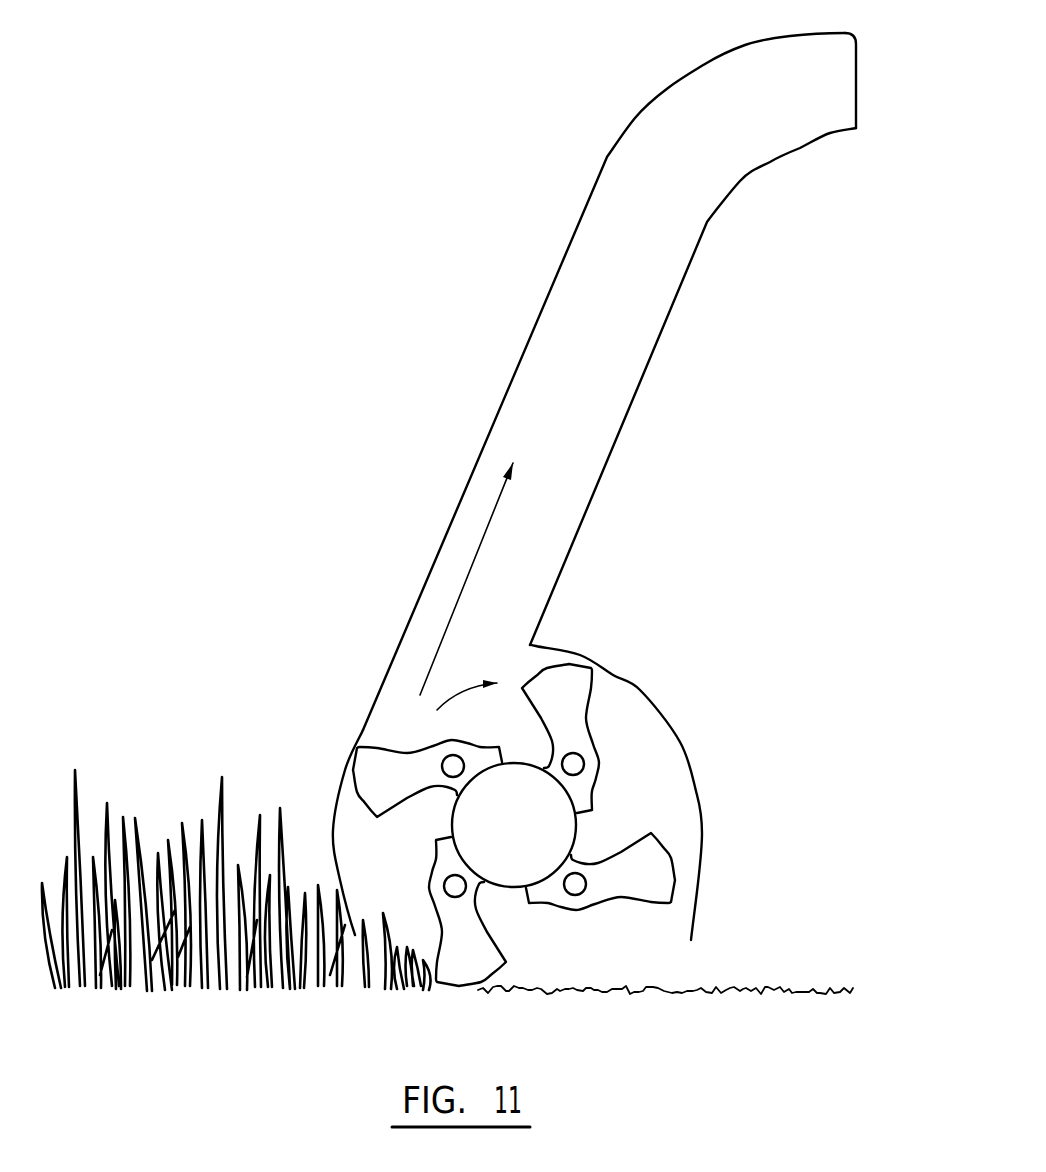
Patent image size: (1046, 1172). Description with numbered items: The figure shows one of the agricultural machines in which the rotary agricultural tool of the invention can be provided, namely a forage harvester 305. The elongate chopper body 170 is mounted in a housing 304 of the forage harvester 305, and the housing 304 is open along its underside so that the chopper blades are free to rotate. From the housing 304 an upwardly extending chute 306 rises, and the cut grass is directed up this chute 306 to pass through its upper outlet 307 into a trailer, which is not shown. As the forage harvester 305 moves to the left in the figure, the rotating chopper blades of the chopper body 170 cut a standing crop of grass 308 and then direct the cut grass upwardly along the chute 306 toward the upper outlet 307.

The elongate chopper body 170 is at (553, 840).
The housing 304 is at (680, 742).
The forage harvester 305 is at (628, 493).
The chute 306 is at (657, 342).
The upper outlet 307 is at (864, 138).
The standing crop of grass 308 is at (140, 870).